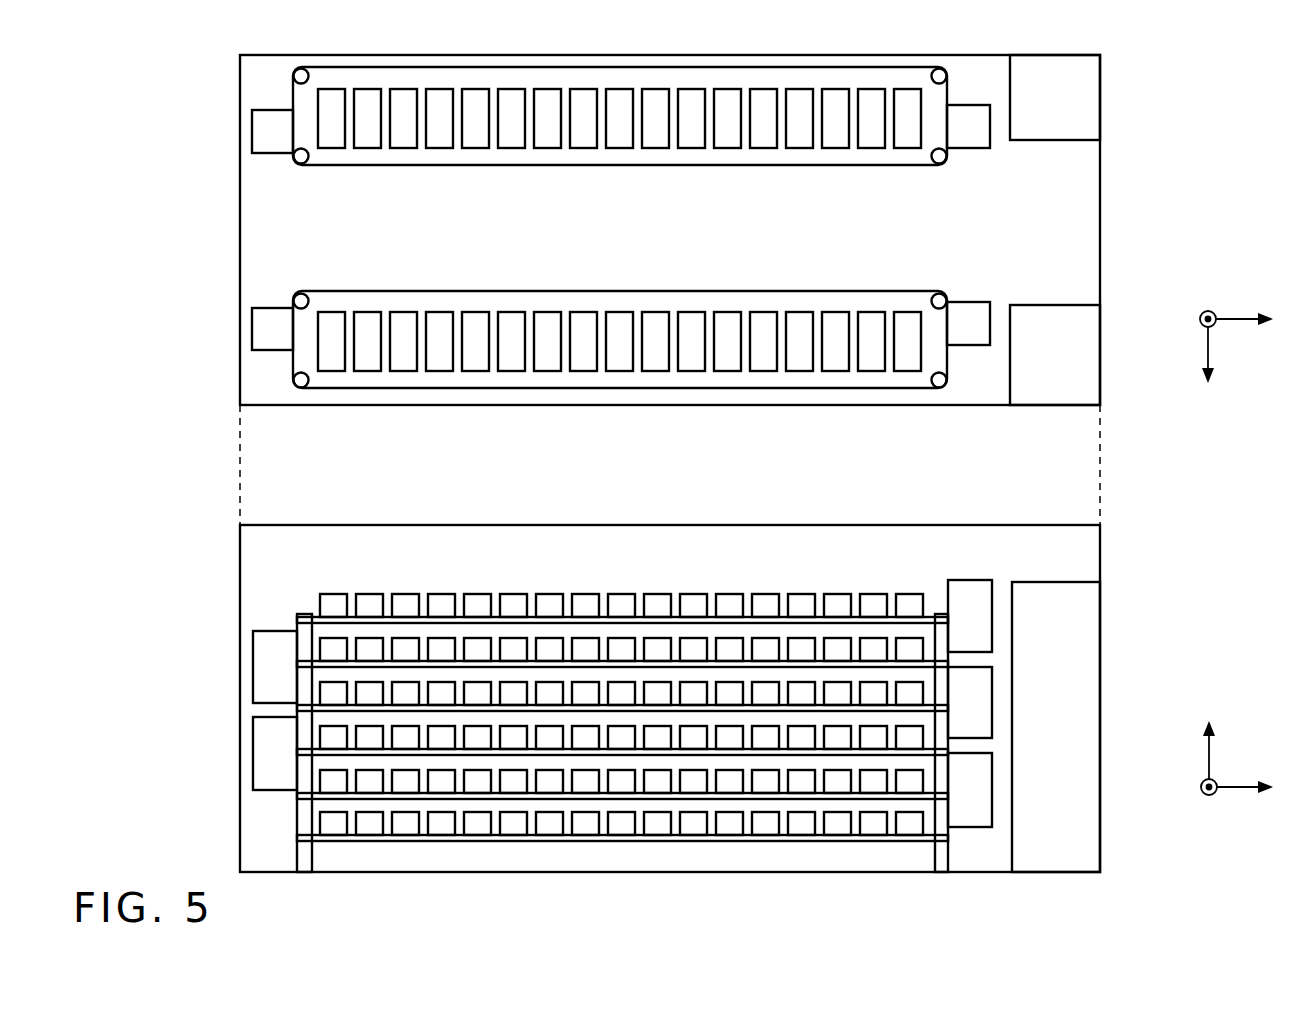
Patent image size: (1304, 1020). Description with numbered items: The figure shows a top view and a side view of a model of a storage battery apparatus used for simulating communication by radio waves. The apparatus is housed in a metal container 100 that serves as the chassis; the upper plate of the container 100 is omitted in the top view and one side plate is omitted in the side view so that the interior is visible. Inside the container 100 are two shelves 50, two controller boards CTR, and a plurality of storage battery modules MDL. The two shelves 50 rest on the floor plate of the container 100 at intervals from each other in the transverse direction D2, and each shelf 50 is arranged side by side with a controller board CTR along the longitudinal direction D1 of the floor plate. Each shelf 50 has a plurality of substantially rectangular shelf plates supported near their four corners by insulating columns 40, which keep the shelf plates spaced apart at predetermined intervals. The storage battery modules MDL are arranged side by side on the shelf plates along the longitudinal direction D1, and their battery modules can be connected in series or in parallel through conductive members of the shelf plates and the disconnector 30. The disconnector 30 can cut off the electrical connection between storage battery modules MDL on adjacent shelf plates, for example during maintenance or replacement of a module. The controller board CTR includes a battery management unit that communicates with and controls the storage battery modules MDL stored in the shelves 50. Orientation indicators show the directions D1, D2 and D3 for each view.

The container 100 is at (633, 55).
The shelf 50 is at (475, 76).
The insulating column 40 is at (301, 68).
The disconnector 30 is at (971, 120).
The storage battery module MDL is at (865, 94).
The controller board CTR is at (1090, 89).
The longitudinal direction D1 is at (1260, 553).
The transverse direction D2 is at (1176, 812).
The third direction D3 is at (1208, 310).